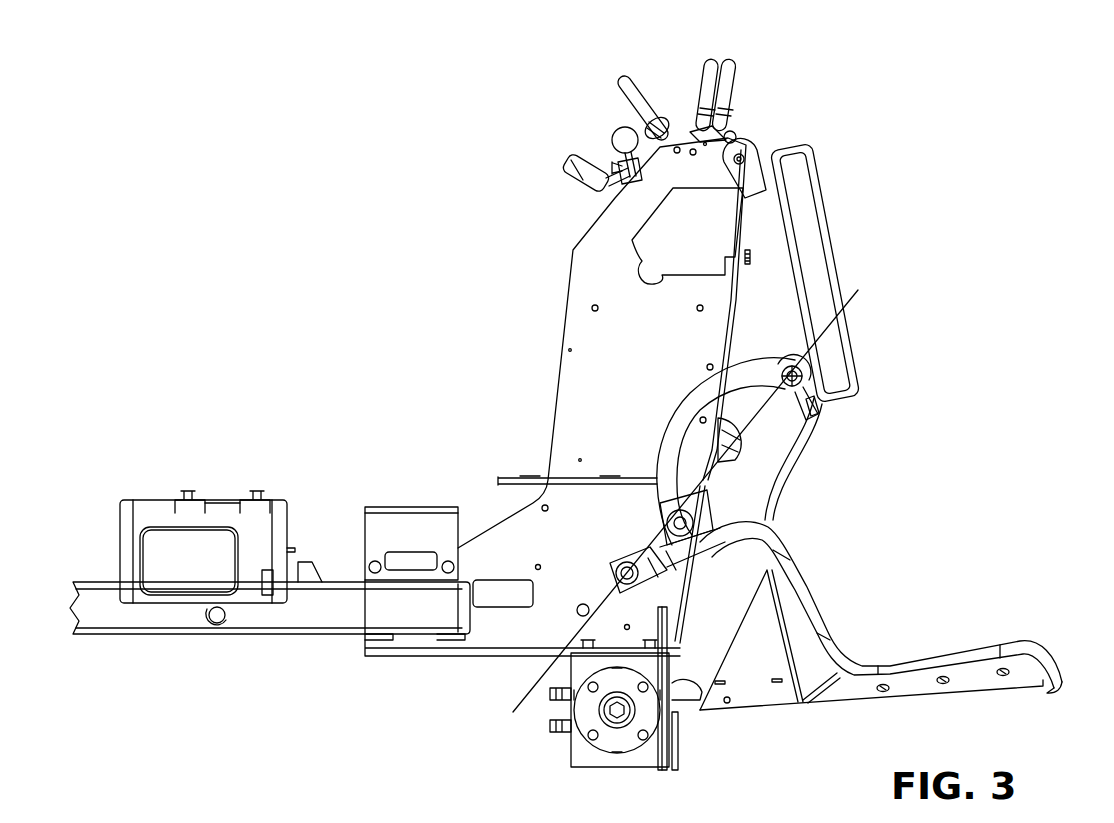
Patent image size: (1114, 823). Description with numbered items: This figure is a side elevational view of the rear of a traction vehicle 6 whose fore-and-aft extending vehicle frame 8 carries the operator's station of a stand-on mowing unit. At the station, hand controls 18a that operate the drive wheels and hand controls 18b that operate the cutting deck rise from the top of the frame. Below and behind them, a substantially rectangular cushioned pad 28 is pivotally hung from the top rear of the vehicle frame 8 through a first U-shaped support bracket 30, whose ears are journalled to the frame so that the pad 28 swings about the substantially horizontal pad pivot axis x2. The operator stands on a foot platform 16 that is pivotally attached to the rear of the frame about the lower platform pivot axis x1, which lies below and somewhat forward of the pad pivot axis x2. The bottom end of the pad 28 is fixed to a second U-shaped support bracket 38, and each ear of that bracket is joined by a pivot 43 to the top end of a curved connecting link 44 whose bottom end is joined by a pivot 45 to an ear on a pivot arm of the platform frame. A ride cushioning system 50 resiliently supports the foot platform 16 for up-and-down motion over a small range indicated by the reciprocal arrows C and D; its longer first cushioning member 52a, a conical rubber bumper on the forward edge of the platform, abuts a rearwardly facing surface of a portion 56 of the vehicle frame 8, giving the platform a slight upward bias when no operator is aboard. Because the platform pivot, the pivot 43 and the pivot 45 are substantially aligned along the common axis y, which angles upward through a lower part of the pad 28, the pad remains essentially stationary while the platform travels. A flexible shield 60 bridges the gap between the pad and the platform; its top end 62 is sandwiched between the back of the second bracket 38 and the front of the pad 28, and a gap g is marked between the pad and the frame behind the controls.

The traction vehicle 6 is at (560, 360).
The vehicle frame 8 is at (598, 437).
The foot platform 16 is at (935, 648).
The hand controls 18a is at (713, 56).
The hand controls 18b is at (617, 170).
The cushioned pad 28 is at (808, 256).
The first U-shaped support bracket 30 is at (749, 160).
The second U-shaped support bracket 38 is at (813, 418).
The pivot 43 is at (802, 372).
The curved connecting link 44 is at (682, 427).
The pivot 45 is at (694, 514).
The ride cushioning system 50 is at (688, 676).
The first cushioning member 52a is at (688, 714).
The portion of vehicle frame 56 is at (690, 688).
The flexible shield 60 is at (786, 466).
The top end of shield 62 is at (833, 386).
The platform pivot axis x1 is at (638, 577).
The pad pivot axis x2 is at (737, 163).
The common axis y is at (858, 292).
The gap g is at (807, 327).
The arrow C is at (1072, 708).
The arrow D is at (1073, 700).